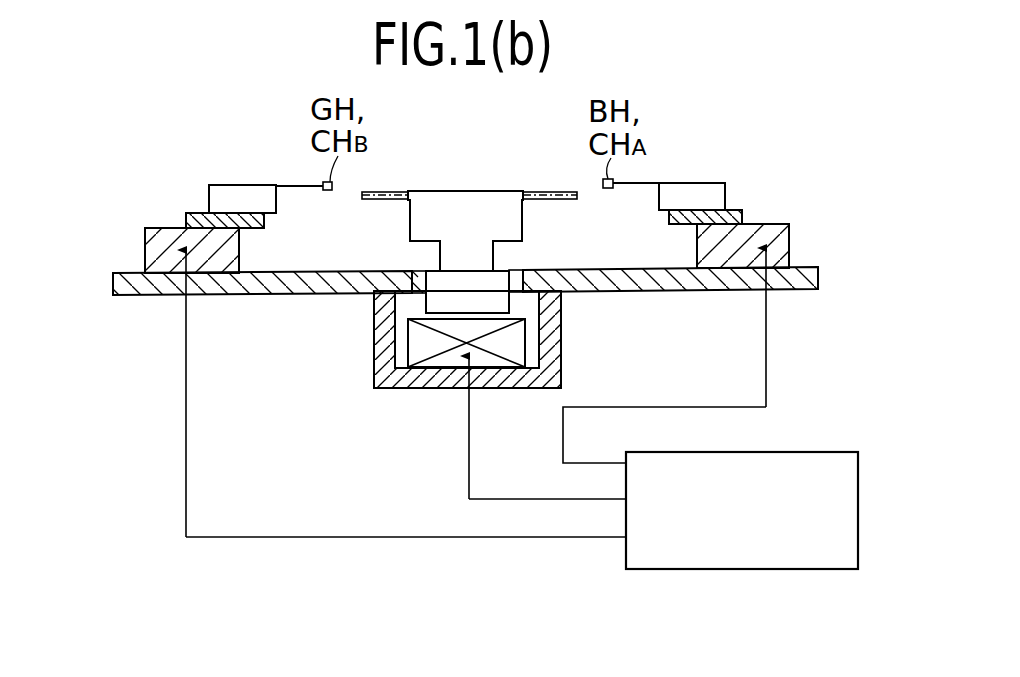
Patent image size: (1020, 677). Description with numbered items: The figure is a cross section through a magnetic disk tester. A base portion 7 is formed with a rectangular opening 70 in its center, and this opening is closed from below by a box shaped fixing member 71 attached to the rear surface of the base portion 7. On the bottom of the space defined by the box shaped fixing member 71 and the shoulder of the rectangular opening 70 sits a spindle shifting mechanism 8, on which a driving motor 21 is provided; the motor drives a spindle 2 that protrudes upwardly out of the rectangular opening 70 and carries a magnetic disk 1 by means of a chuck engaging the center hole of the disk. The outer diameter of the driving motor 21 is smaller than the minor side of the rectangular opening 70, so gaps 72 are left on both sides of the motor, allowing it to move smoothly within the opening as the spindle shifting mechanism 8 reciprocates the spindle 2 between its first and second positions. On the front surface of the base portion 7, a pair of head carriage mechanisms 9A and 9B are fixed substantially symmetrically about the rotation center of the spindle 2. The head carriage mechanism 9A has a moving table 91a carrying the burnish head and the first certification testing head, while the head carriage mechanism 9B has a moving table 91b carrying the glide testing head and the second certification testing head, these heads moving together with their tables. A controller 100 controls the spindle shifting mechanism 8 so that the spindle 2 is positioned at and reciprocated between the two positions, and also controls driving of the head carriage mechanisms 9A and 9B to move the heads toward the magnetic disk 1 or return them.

The magnetic disk 1 is at (392, 180).
The spindle 2 is at (481, 198).
The base portion 7 is at (113, 283).
The spindle shifting mechanism 8 is at (513, 347).
The head carriage mechanism 9A is at (772, 230).
The head carriage mechanism 9B is at (152, 241).
The driving motor 21 is at (495, 302).
The rectangular opening 70 is at (516, 280).
The box shaped fixing member 71 is at (385, 350).
The gaps 72 is at (418, 282).
The moving table 91a is at (736, 211).
The moving table 91b is at (197, 212).
The controller 100 is at (720, 569).